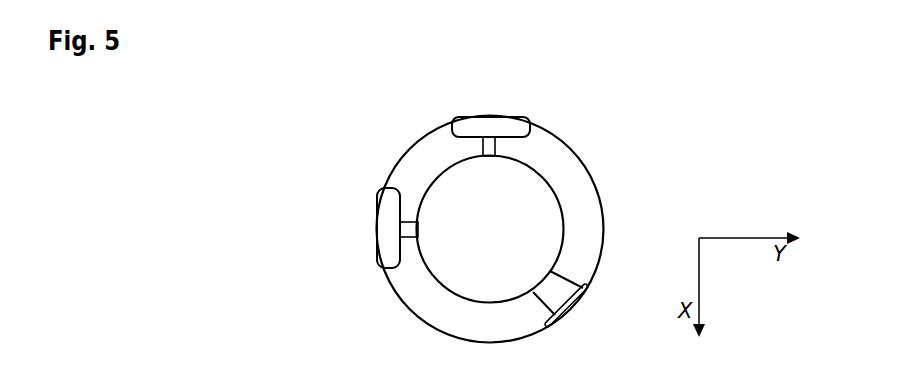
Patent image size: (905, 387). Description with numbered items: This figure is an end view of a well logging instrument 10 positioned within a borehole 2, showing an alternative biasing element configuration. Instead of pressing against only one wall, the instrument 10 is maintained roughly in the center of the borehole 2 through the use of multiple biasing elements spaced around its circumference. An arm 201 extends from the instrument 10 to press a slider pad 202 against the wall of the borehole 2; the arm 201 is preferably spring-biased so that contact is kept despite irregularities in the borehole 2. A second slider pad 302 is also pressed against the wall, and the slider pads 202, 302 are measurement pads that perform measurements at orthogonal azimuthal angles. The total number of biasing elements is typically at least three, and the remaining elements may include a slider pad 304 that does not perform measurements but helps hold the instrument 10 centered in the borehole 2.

The borehole 2 is at (437, 329).
The instrument 10 is at (557, 195).
The arm 201 is at (408, 222).
The slider pad 202 is at (395, 268).
The slider pad 302 is at (457, 133).
The slider pad 304 is at (572, 298).